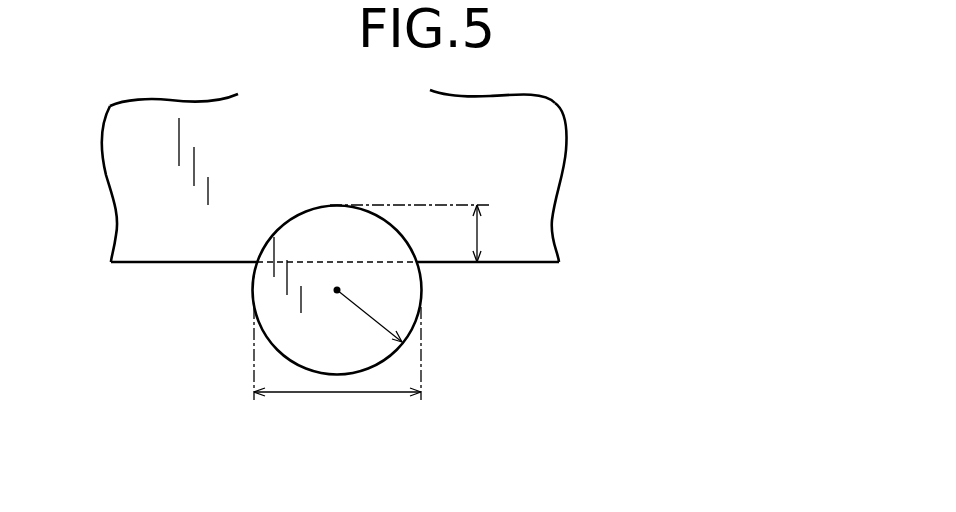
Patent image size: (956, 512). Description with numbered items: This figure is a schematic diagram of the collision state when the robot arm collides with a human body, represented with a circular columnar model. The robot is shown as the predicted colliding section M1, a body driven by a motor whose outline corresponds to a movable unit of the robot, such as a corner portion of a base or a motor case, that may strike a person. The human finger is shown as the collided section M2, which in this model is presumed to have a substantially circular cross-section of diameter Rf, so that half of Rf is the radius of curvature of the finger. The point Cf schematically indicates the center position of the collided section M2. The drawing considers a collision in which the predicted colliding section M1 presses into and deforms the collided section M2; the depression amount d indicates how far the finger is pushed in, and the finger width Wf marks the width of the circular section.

The predicted colliding section M1 is at (567, 157).
The collided section M2 is at (252, 285).
The center position of the collided section Cf is at (324, 291).
The diameter Rf is at (362, 310).
The depression amount d is at (477, 233).
The finger width Wf is at (337, 369).